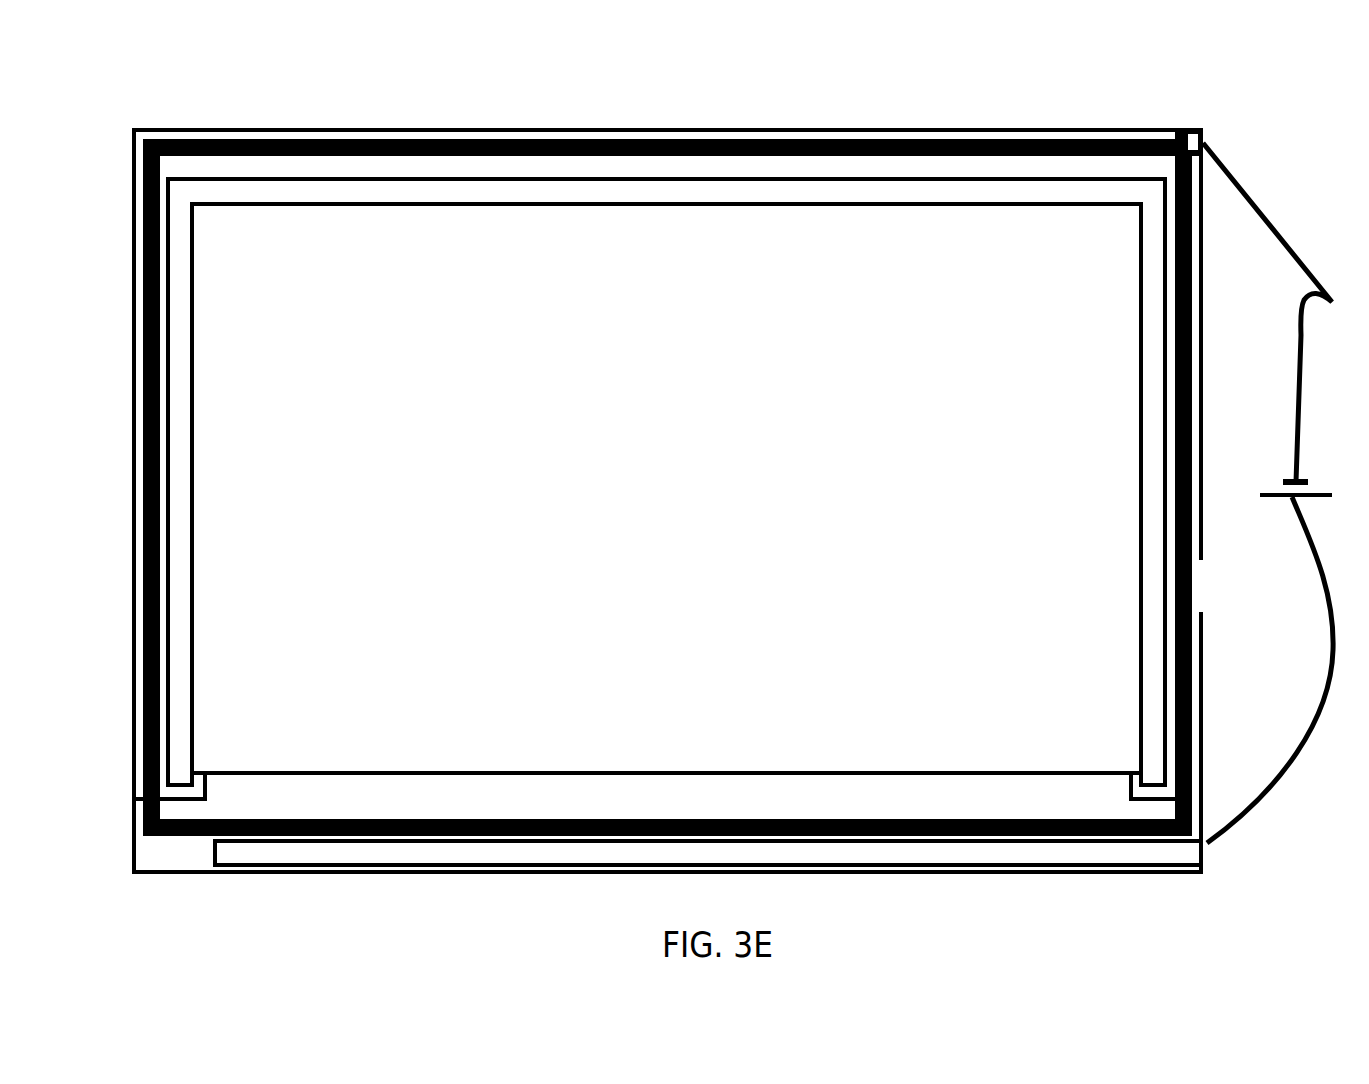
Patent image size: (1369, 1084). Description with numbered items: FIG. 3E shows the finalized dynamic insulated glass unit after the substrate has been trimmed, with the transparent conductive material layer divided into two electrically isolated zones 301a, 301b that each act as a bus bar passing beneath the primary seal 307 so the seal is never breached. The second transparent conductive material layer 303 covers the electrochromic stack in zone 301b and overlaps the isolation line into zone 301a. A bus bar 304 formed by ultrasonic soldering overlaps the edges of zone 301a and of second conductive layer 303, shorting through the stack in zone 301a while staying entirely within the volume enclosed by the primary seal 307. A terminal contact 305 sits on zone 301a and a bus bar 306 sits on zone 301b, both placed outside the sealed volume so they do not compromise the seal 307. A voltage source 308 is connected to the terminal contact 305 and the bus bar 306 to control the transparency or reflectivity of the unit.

The conductive zone 301a is at (257, 167).
The conductive zone 301b is at (495, 801).
The second transparent conductive material layer 303 is at (810, 673).
The bus bar 304 is at (833, 194).
The terminal contact 305 is at (1203, 137).
The bus bar 306 is at (1060, 850).
The primary seal 307 is at (200, 838).
The voltage source 308 is at (1270, 662).